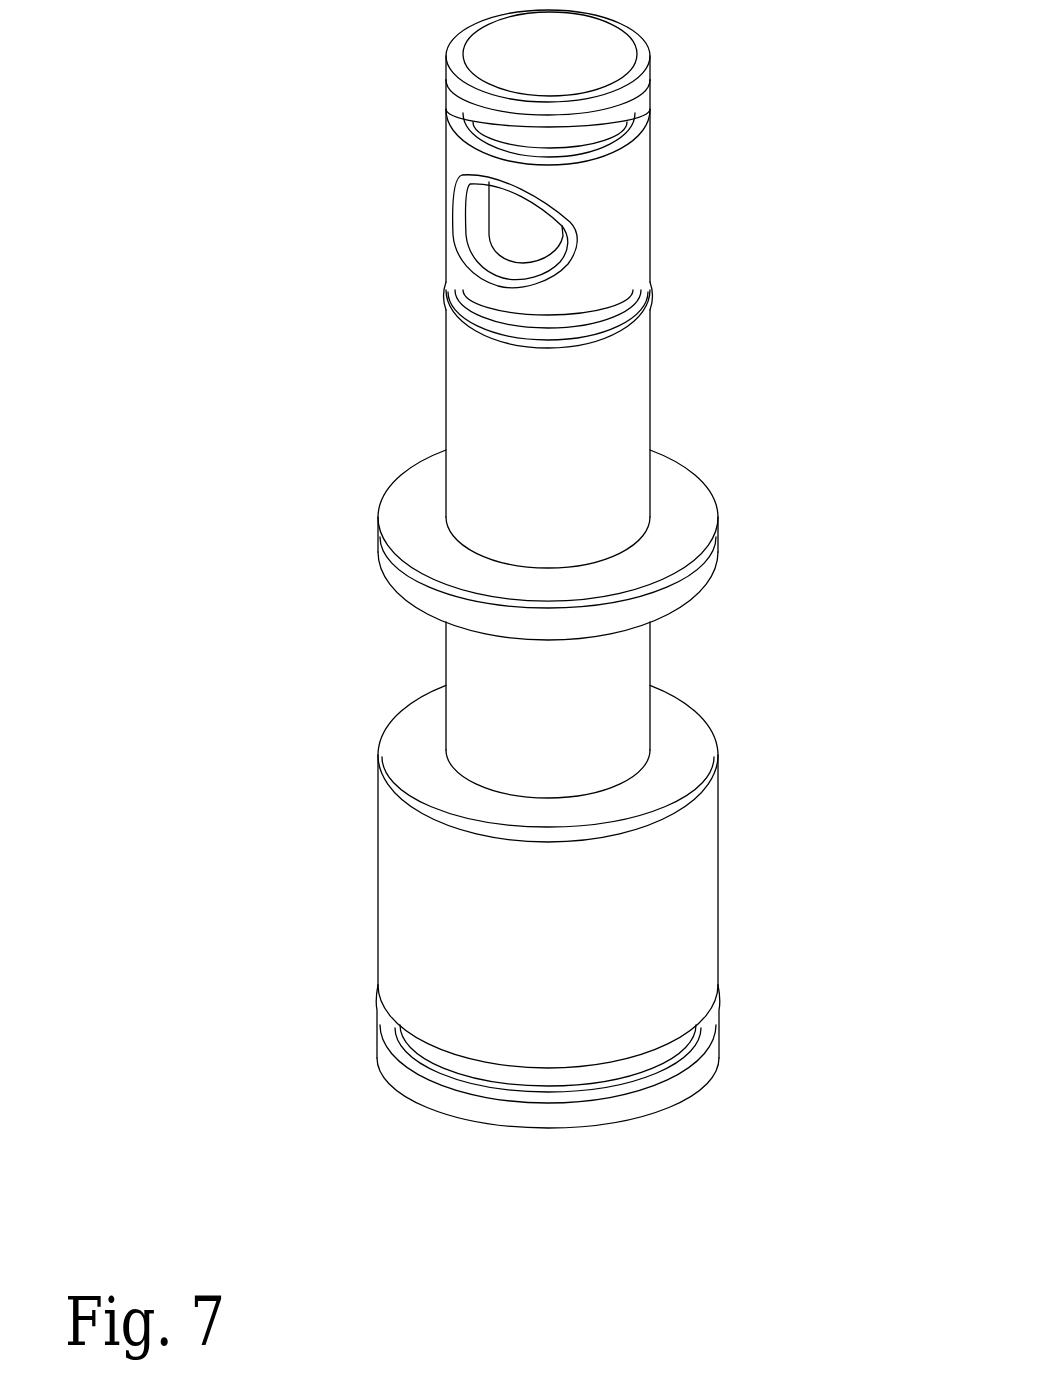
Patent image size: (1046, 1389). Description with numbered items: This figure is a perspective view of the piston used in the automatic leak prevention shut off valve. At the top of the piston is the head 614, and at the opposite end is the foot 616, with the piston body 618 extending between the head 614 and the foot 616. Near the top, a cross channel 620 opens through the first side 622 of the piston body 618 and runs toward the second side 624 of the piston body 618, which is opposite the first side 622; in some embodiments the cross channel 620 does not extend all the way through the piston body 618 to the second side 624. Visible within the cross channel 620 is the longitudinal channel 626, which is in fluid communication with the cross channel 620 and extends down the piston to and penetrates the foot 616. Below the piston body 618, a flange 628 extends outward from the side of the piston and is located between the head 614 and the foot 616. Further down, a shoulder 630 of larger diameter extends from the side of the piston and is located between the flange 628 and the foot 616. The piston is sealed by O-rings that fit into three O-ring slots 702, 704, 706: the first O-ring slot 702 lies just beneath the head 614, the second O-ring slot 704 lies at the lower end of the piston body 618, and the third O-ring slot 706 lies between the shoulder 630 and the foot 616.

The head 614 is at (570, 50).
The O-ring slot 702 is at (624, 87).
The piston body 618 is at (650, 168).
The second side 624 is at (568, 184).
The cross channel 620 is at (463, 214).
The first side 622 is at (455, 265).
The longitudinal channel 626 is at (552, 240).
The O-ring slot 704 is at (680, 298).
The flange 628 is at (698, 577).
The shoulder 630 is at (712, 753).
The O-ring slot 706 is at (621, 920).
The foot 616 is at (622, 1120).